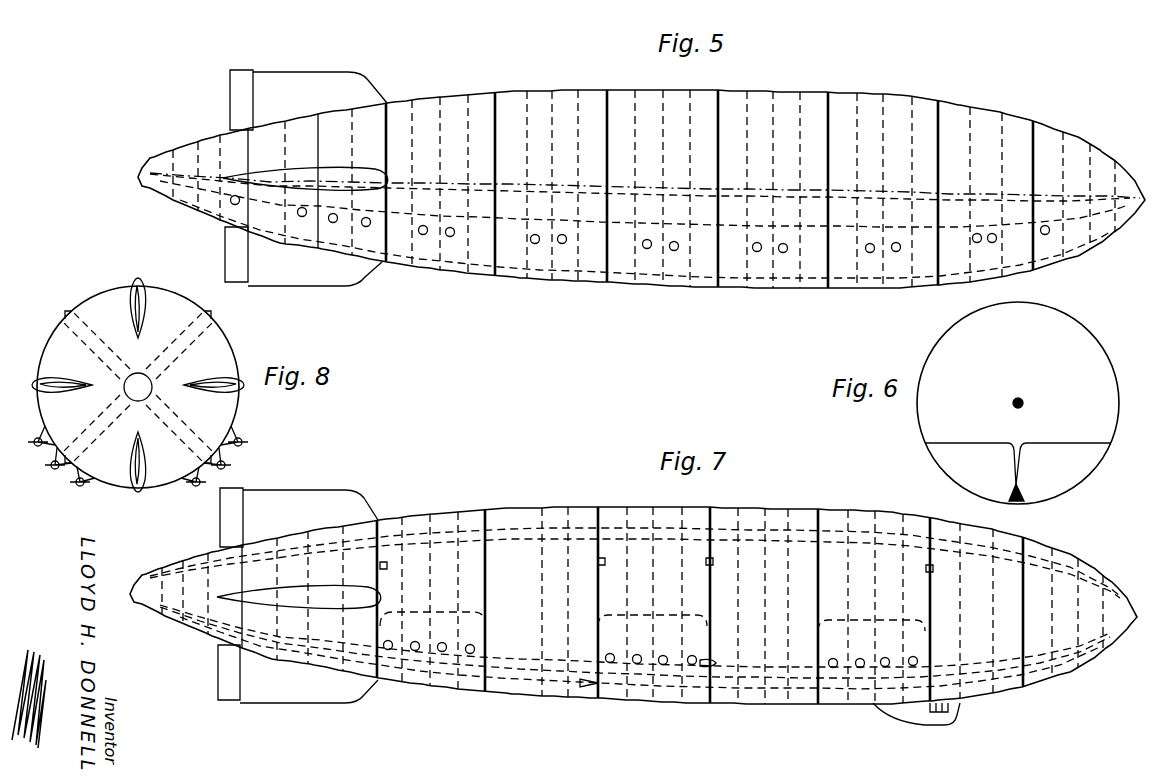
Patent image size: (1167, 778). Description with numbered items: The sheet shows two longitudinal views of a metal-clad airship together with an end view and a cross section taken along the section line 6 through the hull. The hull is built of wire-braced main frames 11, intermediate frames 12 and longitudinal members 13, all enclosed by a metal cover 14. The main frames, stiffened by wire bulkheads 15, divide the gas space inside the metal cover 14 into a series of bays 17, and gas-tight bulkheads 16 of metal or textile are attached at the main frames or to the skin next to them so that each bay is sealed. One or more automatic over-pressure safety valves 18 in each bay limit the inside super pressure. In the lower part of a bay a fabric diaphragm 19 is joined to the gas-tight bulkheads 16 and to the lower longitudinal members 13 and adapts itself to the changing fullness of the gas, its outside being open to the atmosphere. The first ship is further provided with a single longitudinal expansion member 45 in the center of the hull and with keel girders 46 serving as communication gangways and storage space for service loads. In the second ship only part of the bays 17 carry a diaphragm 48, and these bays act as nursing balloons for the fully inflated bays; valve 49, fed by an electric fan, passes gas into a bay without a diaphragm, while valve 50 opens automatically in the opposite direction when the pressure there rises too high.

In FIG. 5, the section line 6— 6 is at (681, 302).
In FIG. 5, the main frame 11 is at (482, 98).
In FIG. 7, the main frame 11 is at (485, 512).
In FIG. 5, the intermediate frame 12 is at (578, 92).
In FIG. 7, the intermediate frame 12 is at (568, 510).
In FIG. 8, the longitudinal member 13 is at (62, 328).
In FIG. 7, the longitudinal member 13 is at (776, 532).
In FIG. 5, the metal cover 14 is at (758, 90).
In FIG. 7, the metal cover 14 is at (752, 508).
In FIG. 5, the wire bulkhead 15 is at (828, 100).
In FIG. 7, the wire bulkhead 15 is at (820, 512).
In FIG. 5, the gas-tight bulkhead 16 is at (727, 102).
In FIG. 7, the gas-tight bulkhead 16 is at (718, 512).
In FIG. 5, the bay 17 is at (644, 189).
In FIG. 7, the bay 17 is at (635, 605).
In FIG. 5, the automatic over-pressure safety valve 18 is at (535, 244).
In FIG. 7, the automatic over-pressure safety valve 18 is at (610, 663).
In FIG. 5, the diaphragm 19 is at (630, 224).
In FIG. 6, the diaphragm 19 is at (1074, 444).
In FIG. 5, the longitudinal expansion member 45 is at (776, 188).
In FIG. 6, the longitudinal expansion member 45 is at (1022, 399).
In FIG. 5, the keel girder 46 is at (783, 280).
In FIG. 6, the keel girder 46 is at (1025, 497).
In FIG. 7, the diaphragm 48 is at (434, 614).
In FIG. 7, the valve 49 is at (380, 565).
In FIG. 7, the valve 50 is at (380, 572).